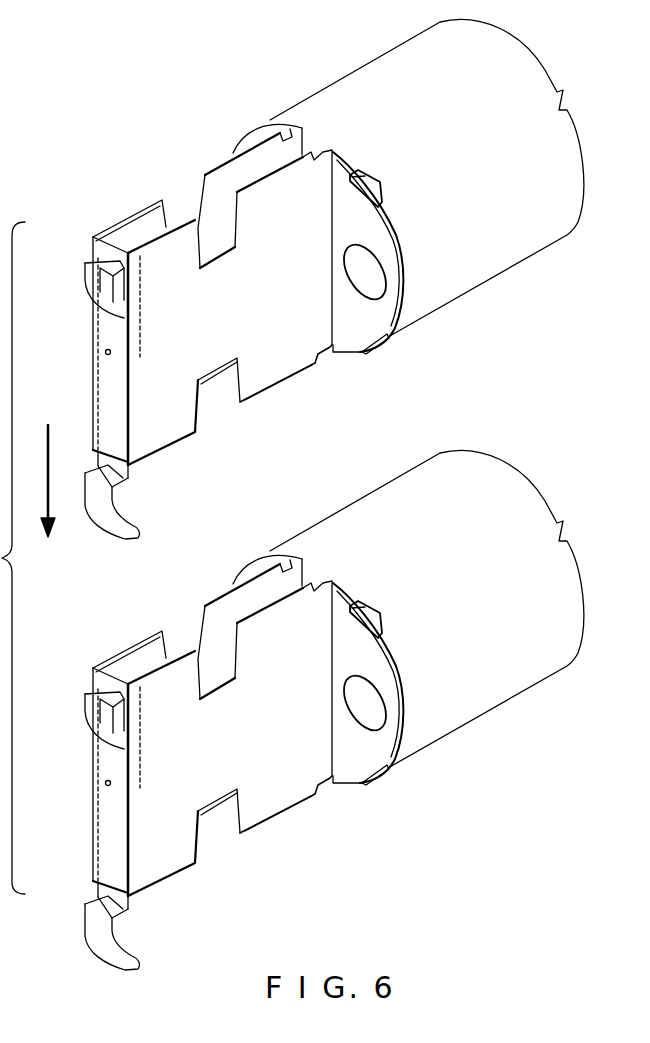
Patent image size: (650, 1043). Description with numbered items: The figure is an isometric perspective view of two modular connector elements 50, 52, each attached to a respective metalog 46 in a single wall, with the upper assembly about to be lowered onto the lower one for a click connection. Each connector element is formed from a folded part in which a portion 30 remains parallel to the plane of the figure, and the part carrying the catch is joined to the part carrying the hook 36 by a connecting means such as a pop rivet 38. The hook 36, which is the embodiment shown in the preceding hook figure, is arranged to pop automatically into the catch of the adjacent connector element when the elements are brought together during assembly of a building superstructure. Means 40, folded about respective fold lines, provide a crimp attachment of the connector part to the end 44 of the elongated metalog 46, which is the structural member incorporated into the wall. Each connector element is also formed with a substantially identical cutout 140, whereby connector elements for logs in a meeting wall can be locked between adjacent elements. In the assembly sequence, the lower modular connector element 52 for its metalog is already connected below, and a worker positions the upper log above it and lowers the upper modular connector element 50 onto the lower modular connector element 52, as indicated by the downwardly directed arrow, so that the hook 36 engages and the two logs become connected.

The portion 30 is at (110, 395).
The hook 36 is at (105, 520).
The pop rivet 38 is at (105, 352).
The means for crimp attachment 40 is at (367, 173).
The end 44 is at (397, 238).
The metalog 46 is at (358, 95).
The modular connector element 50 is at (272, 367).
The modular connector element 52 is at (274, 798).
The cutout 140 is at (180, 200).